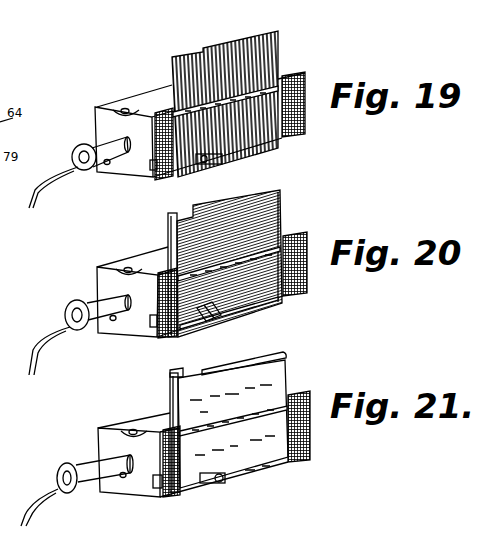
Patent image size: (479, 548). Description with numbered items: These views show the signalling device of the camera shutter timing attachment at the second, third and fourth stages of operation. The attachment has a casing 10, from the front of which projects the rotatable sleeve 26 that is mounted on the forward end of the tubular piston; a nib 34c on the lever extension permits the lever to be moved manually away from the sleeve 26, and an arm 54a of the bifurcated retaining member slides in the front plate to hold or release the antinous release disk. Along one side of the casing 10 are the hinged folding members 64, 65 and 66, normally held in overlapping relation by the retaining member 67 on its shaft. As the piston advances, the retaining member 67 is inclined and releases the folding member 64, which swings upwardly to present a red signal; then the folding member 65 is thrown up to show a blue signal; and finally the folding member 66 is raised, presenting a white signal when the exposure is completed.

In FIG. 19, the casing 10 is at (122, 102).
In FIG. 20, the casing 10 is at (123, 265).
In FIG. 21, the casing 10 is at (133, 420).
In FIG. 19, the sleeve 26 is at (100, 148).
In FIG. 20, the sleeve 26 is at (98, 308).
In FIG. 21, the sleeve 26 is at (91, 469).
In FIG. 19, the nib 34c is at (121, 110).
In FIG. 20, the nib 34c is at (124, 268).
In FIG. 21, the nib 34c is at (129, 430).
In FIG. 19, the arm of retaining member 54a is at (153, 171).
In FIG. 20, the arm of retaining member 54a is at (152, 328).
In FIG. 21, the arm of retaining member 54a is at (156, 490).
In FIG. 19, the folding member 64 is at (278, 35).
In FIG. 19, the folding member 65 is at (280, 120).
In FIG. 20, the folding member 65 is at (282, 208).
In FIG. 20, the folding member 66 is at (308, 278).
In FIG. 21, the folding member 66 is at (270, 367).
In FIG. 19, the retaining member 67 is at (205, 158).
In FIG. 20, the retaining member 67 is at (207, 314).
In FIG. 21, the retaining member 67 is at (210, 477).